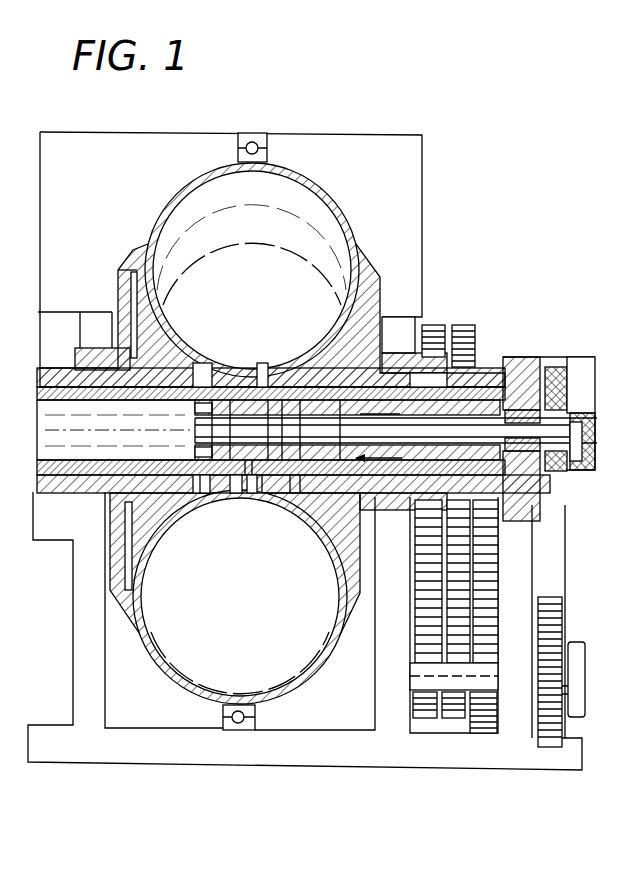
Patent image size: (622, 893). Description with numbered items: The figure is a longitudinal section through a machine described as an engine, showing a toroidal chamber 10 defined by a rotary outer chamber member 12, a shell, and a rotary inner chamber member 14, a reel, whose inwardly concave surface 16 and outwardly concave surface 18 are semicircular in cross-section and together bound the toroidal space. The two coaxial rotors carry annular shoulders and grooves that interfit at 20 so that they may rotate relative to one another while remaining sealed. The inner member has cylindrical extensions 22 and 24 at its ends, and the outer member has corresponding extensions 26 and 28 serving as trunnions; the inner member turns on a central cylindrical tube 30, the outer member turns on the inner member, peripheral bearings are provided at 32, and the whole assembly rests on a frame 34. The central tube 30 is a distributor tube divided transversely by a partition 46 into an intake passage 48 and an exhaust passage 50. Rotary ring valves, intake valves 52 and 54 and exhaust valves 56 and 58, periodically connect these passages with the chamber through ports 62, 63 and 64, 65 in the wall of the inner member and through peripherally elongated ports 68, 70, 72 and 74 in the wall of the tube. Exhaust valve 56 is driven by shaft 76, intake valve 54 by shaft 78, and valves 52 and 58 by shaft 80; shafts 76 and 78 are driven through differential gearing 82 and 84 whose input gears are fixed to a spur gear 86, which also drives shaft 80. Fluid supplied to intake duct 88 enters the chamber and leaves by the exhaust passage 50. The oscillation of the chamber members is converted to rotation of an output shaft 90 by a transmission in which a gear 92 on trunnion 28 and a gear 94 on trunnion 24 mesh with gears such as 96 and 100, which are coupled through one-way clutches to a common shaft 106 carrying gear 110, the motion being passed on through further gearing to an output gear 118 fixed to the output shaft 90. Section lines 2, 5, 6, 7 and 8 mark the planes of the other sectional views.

The section line 2- 2 is at (250, 203).
The section line 5- 5 is at (449, 320).
The section line 6- 6 is at (478, 330).
The section line 7- 7 is at (505, 293).
The section line 8- 8 is at (575, 343).
The toroidal chamber 10 is at (314, 244).
The rotary outer chamber member 12 is at (170, 193).
The rotary inner chamber member 14 is at (138, 303).
The inwardly concave surface 16 is at (307, 188).
The outwardly concave surface 18 is at (158, 300).
The interfit of annular shoulders and grooves 20 is at (147, 271).
The cylindrical extension 22 is at (44, 378).
The cylindrical extension 24 is at (490, 378).
The cylindrical extension 26 is at (80, 362).
The cylindrical extension 28 is at (393, 318).
The central cylindrical tube 30 is at (50, 396).
The peripheral bearings 32 is at (267, 153).
The frame 34 is at (72, 648).
The partition 46 is at (232, 498).
The intake passage 48 is at (330, 492).
The exhaust passage 50 is at (52, 428).
The intake valve 52 is at (261, 497).
The intake valve 54 is at (296, 496).
The exhaust valve 56 is at (193, 455).
The exhaust valve 58 is at (226, 497).
The port 62 is at (201, 378).
The port 63 is at (258, 374).
The port 64 is at (196, 500).
The port 65 is at (252, 500).
The distributor tube port 68 is at (219, 387).
The distributor tube port 70 is at (258, 380).
The distributor tube port 72 is at (203, 520).
The distributor tube port 74 is at (253, 540).
The valve shaft 76 is at (200, 432).
The valve shaft 78 is at (306, 400).
The valve shaft 80 is at (194, 411).
The differential gearing 82 is at (580, 478).
The differential gearing 84 is at (527, 478).
The spur gear 86 is at (557, 372).
The intake duct 88 is at (505, 374).
The output shaft 90 is at (418, 679).
The gear 92 is at (429, 325).
The gear 94 is at (460, 325).
The gear 96 is at (420, 719).
The gear 100 is at (453, 719).
The shaft 106 is at (417, 620).
The gear 110 is at (482, 729).
The output gear 118 is at (550, 719).